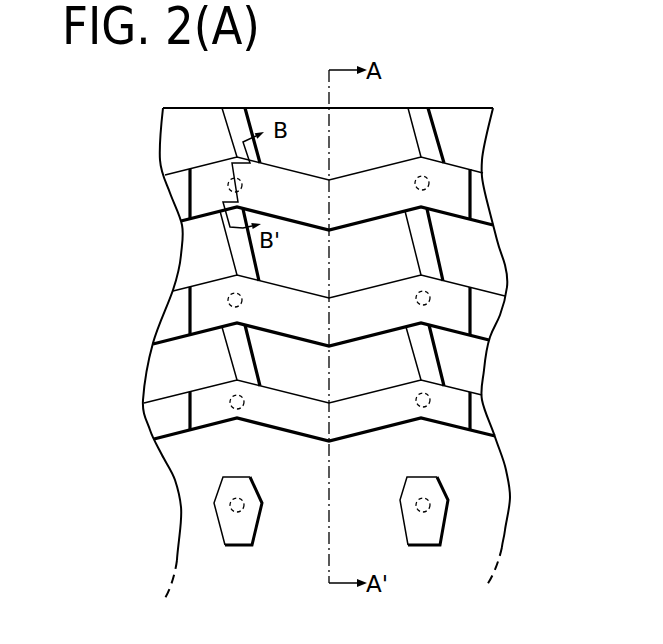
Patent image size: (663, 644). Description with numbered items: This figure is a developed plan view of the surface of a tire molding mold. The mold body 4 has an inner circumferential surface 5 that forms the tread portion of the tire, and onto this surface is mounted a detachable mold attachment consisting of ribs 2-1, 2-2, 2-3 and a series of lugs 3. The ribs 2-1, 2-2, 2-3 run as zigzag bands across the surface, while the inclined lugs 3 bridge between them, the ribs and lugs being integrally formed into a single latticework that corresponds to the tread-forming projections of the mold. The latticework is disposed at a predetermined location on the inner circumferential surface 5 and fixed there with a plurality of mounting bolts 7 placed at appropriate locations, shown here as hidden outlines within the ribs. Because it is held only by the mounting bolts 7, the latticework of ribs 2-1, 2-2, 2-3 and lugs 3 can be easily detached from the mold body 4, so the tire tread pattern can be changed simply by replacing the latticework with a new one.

The rib 2-1 is at (292, 167).
The rib 2-2 is at (297, 287).
The rib 2-3 is at (288, 390).
The lug 3 is at (228, 133).
The mold body 4 is at (457, 107).
The inner circumferential surface 5 is at (370, 125).
The mounting bolt 7 is at (242, 185).